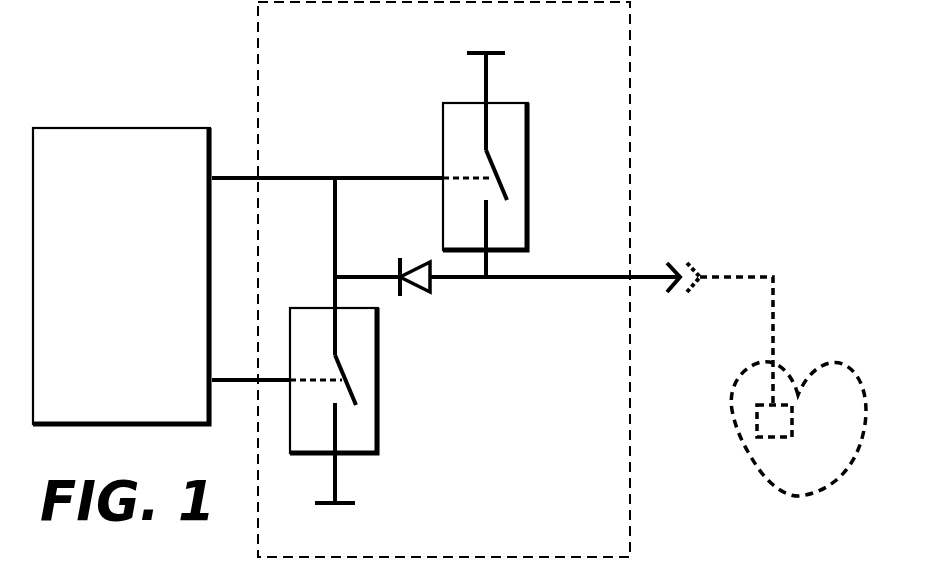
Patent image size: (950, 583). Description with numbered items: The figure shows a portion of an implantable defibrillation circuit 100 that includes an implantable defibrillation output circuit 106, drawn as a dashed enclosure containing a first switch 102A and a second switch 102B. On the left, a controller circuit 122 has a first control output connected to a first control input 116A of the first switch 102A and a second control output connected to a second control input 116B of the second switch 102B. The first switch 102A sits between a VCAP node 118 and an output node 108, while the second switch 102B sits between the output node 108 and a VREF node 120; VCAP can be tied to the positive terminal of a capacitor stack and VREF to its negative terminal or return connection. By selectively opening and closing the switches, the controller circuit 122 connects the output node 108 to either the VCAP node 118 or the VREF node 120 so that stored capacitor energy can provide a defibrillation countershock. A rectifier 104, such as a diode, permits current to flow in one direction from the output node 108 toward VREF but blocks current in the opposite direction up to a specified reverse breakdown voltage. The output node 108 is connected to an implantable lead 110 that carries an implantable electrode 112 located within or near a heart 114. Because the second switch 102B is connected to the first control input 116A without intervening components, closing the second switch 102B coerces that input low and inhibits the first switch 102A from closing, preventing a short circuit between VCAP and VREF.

The implantable defibrillation circuit 100 is at (163, 90).
The controller circuit 122 is at (120, 127).
The implantable defibrillation output circuit 106 is at (630, 512).
The VCAP node 118 is at (488, 74).
The first switch 102A is at (531, 173).
The first control input 116A is at (470, 175).
The second switch 102B is at (381, 385).
The second control input 116B is at (320, 378).
The VREF node 120 is at (337, 476).
The rectifier 104 is at (431, 291).
The output node 108 is at (565, 281).
The implantable lead 110 is at (772, 338).
The implantable electrode 112 is at (756, 430).
The heart 114 is at (758, 478).